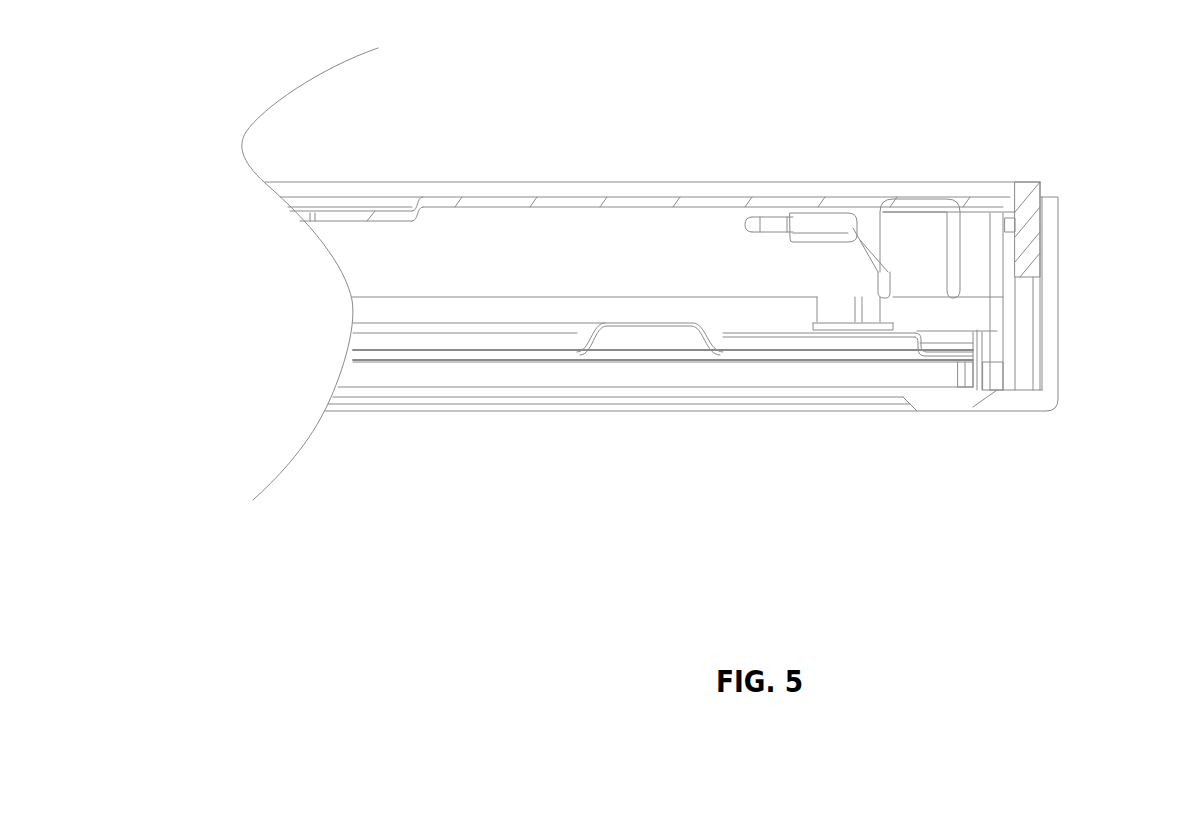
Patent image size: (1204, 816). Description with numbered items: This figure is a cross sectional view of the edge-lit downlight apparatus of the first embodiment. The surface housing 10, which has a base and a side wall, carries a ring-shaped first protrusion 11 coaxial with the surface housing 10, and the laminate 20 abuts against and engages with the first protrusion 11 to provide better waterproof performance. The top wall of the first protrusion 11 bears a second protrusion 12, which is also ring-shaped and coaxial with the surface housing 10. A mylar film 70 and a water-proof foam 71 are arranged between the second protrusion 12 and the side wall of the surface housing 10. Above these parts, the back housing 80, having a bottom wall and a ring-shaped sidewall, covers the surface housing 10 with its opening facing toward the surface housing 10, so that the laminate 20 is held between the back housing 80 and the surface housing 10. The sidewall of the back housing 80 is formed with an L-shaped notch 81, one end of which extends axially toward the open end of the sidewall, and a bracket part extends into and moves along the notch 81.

The surface housing 10 is at (1068, 399).
The first protrusion 11 is at (1003, 380).
The second protrusion 12 is at (982, 376).
The laminate 20 is at (972, 324).
The mylar film 70 is at (1028, 250).
The water-proof foam 71 is at (1007, 325).
The back housing 80 is at (672, 188).
The notch 81 is at (858, 226).